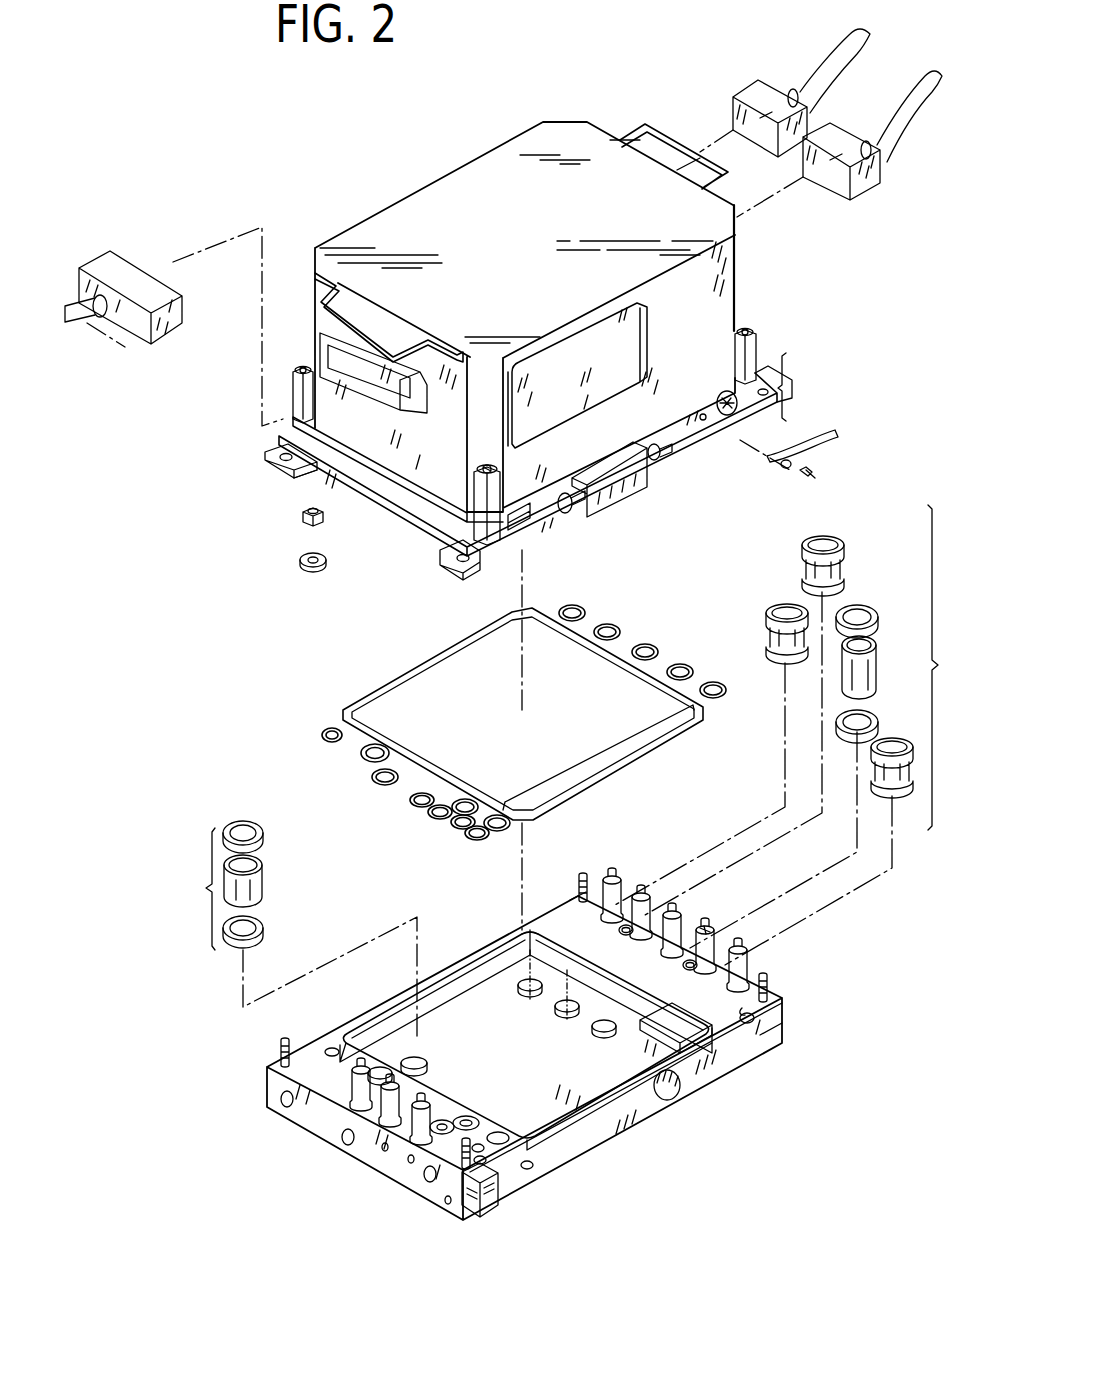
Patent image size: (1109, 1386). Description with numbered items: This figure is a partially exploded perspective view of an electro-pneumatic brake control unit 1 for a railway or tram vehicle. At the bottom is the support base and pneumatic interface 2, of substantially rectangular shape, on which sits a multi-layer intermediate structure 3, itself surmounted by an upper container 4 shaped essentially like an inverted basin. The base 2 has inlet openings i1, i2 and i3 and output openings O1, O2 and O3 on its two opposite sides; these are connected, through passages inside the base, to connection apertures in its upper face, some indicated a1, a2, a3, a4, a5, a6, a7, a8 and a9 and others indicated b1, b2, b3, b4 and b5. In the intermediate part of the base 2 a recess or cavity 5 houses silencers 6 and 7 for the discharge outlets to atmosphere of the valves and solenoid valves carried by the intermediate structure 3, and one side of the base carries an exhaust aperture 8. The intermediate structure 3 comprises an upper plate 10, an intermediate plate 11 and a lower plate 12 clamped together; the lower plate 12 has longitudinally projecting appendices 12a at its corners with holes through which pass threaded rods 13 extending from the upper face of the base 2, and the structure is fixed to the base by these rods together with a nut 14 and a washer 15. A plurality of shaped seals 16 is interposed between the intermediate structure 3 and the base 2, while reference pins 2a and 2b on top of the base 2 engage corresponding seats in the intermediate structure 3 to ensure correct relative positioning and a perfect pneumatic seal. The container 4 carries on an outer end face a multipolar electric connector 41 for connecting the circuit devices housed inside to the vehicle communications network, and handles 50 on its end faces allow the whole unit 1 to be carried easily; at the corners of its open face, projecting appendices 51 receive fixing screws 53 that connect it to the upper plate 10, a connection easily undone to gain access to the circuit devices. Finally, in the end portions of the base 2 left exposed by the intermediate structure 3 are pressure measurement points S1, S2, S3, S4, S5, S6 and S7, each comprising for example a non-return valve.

The electro-pneumatic brake control unit 1 is at (300, 150).
The support base and pneumatic interface 2 is at (622, 1150).
The reference pin 2a is at (482, 1212).
The reference pin 2b is at (578, 896).
The multi-layer intermediate structure 3 is at (782, 375).
The upper container 4 is at (447, 190).
The recess or cavity 5 is at (477, 1003).
The silencer 6 is at (206, 888).
The silencer 7 is at (786, 735).
The exhaust aperture 8 is at (678, 1087).
The upper plate 10 is at (296, 428).
The intermediate plate 11 is at (320, 474).
The lower plate 12 is at (397, 513).
The projecting appendices 12a is at (265, 465).
The threaded rods 13 is at (281, 1046).
The nut 14 is at (304, 521).
The washer 15 is at (305, 566).
The shaped seals 16 is at (656, 620).
The multipolar electric connector 41 is at (408, 413).
The handles 50 is at (663, 127).
The projecting appendices 51 is at (296, 387).
The fixing screws 53 is at (305, 367).
The connection aperture a1 is at (331, 1048).
The connection aperture a2 is at (380, 1067).
The connection aperture a3 is at (420, 1062).
The connection aperture a4 is at (444, 1120).
The connection aperture a5 is at (469, 1116).
The connection aperture a6 is at (500, 1132).
The connection aperture a7 is at (386, 1151).
The connection aperture a8 is at (482, 1152).
The connection aperture a9 is at (532, 1167).
The connection aperture b1 is at (534, 930).
The connection aperture b2 is at (536, 980).
The connection aperture b3 is at (573, 1002).
The connection aperture b4 is at (650, 1005).
The connection aperture b5 is at (749, 1024).
The inlet opening i1 is at (281, 1100).
The inlet opening i2 is at (346, 1145).
The inlet opening i3 is at (430, 1184).
The pressure measurement point S1 is at (352, 1098).
The pressure measurement point S2 is at (385, 1112).
The pressure measurement point S3 is at (418, 1128).
The pressure measurement point S4 is at (614, 875).
The pressure measurement point S5 is at (648, 896).
The pressure measurement point S6 is at (710, 929).
The pressure measurement point S7 is at (745, 962).
The output opening O1 is at (633, 925).
The output opening O2 is at (692, 960).
The output opening O3 is at (786, 1030).